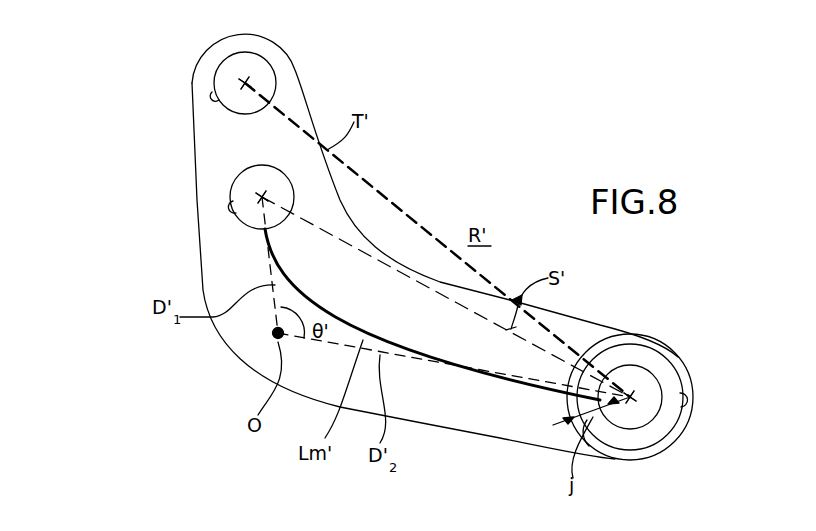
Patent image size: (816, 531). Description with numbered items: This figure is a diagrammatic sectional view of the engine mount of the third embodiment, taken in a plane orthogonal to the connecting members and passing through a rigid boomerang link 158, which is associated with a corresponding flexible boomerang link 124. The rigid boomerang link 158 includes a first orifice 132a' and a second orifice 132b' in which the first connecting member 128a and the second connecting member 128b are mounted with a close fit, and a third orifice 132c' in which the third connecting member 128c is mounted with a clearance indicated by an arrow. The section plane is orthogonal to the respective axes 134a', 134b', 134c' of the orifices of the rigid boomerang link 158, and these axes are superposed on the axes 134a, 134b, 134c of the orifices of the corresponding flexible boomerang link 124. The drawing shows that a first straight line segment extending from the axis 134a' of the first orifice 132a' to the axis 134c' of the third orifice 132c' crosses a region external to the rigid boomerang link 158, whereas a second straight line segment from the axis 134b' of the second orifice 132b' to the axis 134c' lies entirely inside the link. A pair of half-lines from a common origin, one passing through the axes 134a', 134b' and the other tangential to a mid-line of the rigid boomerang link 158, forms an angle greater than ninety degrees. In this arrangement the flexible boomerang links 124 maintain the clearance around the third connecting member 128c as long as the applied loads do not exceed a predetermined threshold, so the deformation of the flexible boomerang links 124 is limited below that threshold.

The flexible boomerang link 124 is at (442, 230).
The first connecting member 128a is at (262, 64).
The second connecting member 128b is at (278, 181).
The third connecting member 128c is at (648, 366).
The first orifice 132a' is at (161, 104).
The second orifice 132b' is at (178, 232).
The third orifice 132c' is at (717, 429).
The axis of the first orifice of the flexible boomerang link 134a is at (153, 47).
The axis of the first orifice 134a' is at (153, 47).
The axis of the second orifice of the flexible boomerang link 134b is at (156, 176).
The axis of the second orifice 134b' is at (156, 176).
The axis of the third orifice of the flexible boomerang link 134c is at (688, 450).
The axis of the third orifice 134c' is at (688, 450).
The rigid boomerang link 158 is at (466, 189).